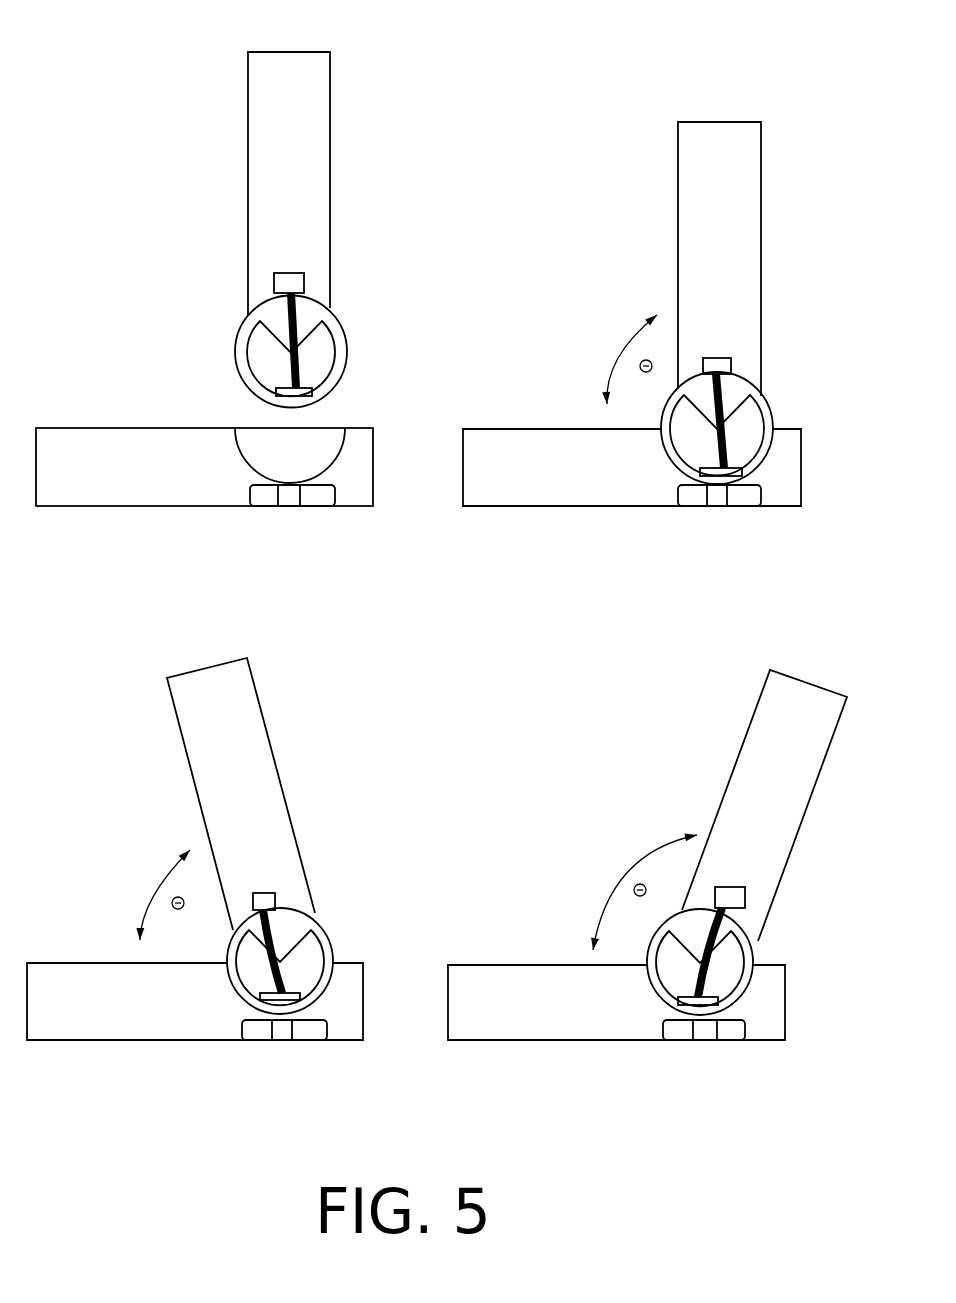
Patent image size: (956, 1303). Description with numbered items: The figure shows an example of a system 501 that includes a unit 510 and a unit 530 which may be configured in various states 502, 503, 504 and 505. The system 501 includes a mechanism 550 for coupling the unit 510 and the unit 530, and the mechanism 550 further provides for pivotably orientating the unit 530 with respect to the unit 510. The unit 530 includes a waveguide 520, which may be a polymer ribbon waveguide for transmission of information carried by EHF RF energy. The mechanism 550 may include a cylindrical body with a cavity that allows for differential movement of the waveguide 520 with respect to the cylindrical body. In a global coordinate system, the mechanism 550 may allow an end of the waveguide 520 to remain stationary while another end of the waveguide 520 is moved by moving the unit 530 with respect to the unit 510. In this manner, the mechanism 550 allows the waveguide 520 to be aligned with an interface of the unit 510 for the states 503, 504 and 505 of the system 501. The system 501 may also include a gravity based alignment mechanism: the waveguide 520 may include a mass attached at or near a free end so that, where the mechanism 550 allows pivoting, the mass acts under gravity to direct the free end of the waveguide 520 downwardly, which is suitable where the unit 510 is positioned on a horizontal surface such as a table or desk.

The system 501 is at (146, 104).
The state 502 is at (142, 188).
The state 503 is at (609, 201).
The state 504 is at (125, 798).
The state 505 is at (649, 795).
The unit 510 is at (153, 428).
The waveguide 520 is at (300, 325).
The unit 530 is at (293, 52).
The mechanism 550 is at (201, 351).